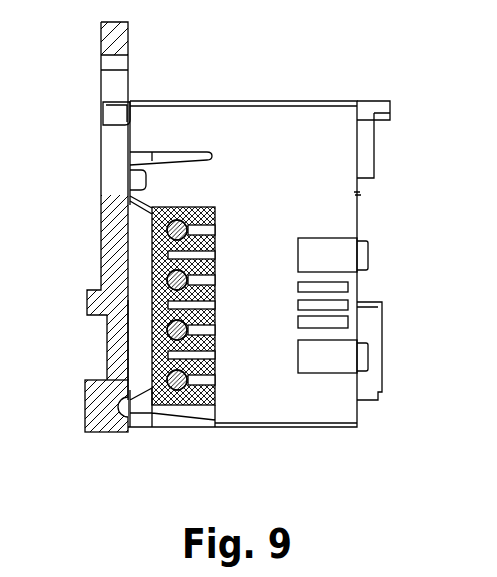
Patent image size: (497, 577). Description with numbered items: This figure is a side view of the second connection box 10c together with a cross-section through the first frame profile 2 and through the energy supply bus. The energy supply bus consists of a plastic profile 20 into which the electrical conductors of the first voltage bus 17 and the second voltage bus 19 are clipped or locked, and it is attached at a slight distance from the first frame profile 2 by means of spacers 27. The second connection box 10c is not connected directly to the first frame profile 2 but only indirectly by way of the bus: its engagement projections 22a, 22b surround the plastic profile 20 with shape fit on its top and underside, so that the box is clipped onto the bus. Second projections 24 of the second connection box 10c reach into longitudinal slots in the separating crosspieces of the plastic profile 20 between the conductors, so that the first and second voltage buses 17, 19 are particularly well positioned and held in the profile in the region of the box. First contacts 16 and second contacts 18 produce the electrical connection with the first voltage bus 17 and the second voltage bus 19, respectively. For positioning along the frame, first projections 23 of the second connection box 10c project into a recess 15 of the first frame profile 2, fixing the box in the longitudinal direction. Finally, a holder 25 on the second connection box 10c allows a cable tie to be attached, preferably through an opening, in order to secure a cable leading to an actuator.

The first frame profile 2 is at (90, 418).
The second connection box 10c is at (318, 110).
The recess 15 is at (118, 172).
The first contacts 16 is at (195, 232).
The first voltage bus 17 is at (177, 232).
The second contacts 18 is at (202, 331).
The second voltage bus 19 is at (177, 332).
The plastic profile 20 is at (152, 277).
The engagement projection 22a is at (178, 412).
The engagement projection 22b is at (143, 211).
The first projections 23 is at (115, 113).
The second projections 24 is at (202, 258).
The holder 25 is at (372, 315).
The spacers 27 is at (133, 328).